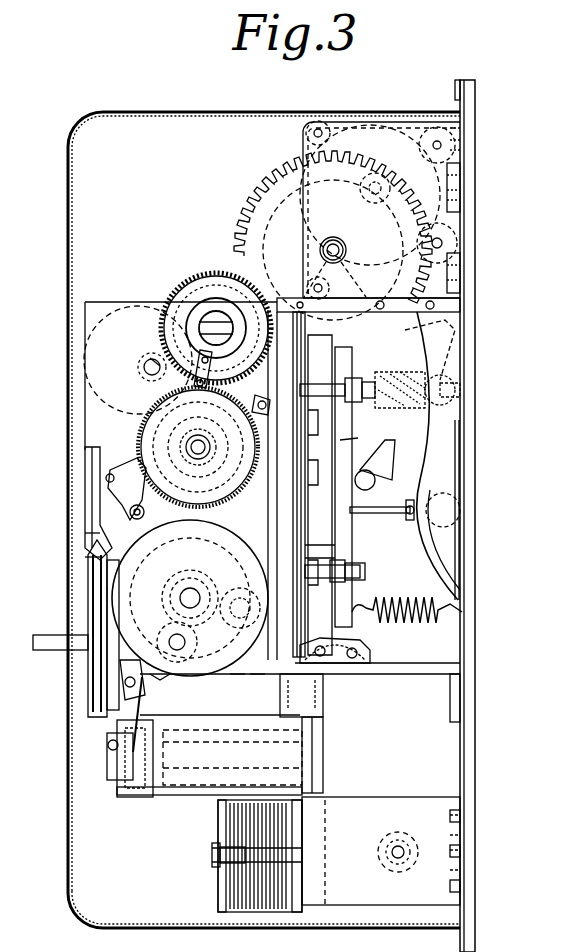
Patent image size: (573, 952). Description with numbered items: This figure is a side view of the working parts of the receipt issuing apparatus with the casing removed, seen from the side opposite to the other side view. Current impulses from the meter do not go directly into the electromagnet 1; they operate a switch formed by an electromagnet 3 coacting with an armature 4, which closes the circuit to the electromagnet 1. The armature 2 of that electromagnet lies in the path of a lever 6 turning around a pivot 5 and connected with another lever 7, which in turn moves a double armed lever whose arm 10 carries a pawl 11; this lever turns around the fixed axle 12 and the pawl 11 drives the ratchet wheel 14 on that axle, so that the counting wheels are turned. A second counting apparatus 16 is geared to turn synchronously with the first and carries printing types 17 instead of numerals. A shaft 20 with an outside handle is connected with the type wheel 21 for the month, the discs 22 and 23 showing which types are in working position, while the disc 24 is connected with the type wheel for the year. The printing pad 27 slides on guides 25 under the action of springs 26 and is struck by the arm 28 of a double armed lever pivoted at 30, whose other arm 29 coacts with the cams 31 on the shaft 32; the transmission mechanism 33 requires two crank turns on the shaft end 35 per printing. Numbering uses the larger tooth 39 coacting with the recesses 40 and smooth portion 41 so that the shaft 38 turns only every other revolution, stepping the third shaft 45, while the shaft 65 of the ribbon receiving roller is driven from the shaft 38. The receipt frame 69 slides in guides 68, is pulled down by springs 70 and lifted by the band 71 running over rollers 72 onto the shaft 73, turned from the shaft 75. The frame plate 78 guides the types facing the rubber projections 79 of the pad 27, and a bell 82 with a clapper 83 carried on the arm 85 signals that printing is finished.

The electromagnet 1 is at (200, 777).
The armature 2 is at (110, 766).
The electromagnet 3 is at (255, 912).
The armature 4 is at (210, 855).
The pivot 5 is at (85, 662).
The lever 6 is at (125, 708).
The lever 7 is at (85, 557).
The arm 10 is at (95, 490).
The pawl 11 is at (106, 460).
The fixed axle 12 is at (128, 512).
The ratchet wheel 14 is at (85, 534).
The counting apparatus 16 is at (190, 598).
The printing types 17 is at (312, 531).
The shaft 20 is at (38, 640).
The type wheel 21 is at (240, 672).
The disc 22 is at (95, 600).
The disc 23 is at (88, 585).
The disc 24 is at (160, 680).
The guides 25 is at (368, 572).
The springs 26 is at (406, 625).
The pad 27 is at (340, 430).
The arm 28 is at (415, 456).
The arm 29 is at (416, 329).
The pivot 30 is at (425, 356).
The cams 31 is at (237, 235).
The shaft 32 is at (336, 237).
The transmission mechanism 33 is at (246, 195).
The shaft end 35 is at (184, 286).
The shaft 38 is at (160, 400).
The larger tooth 39 is at (144, 368).
The larger recesses 40 is at (186, 424).
The smooth portion 41 is at (200, 388).
The third shaft 45 is at (260, 400).
The shaft 65 is at (150, 358).
The guides 68 is at (360, 440).
The frame 69 is at (379, 465).
The springs 70 is at (356, 670).
The band 71 is at (280, 167).
The rollers 72 is at (302, 122).
The shaft 73 is at (445, 243).
The shaft 75 is at (378, 197).
The frame plate 78 is at (256, 676).
The projections 79 is at (306, 552).
The bell 82 is at (446, 548).
The clapper 83 is at (456, 494).
The arm 85 is at (396, 518).